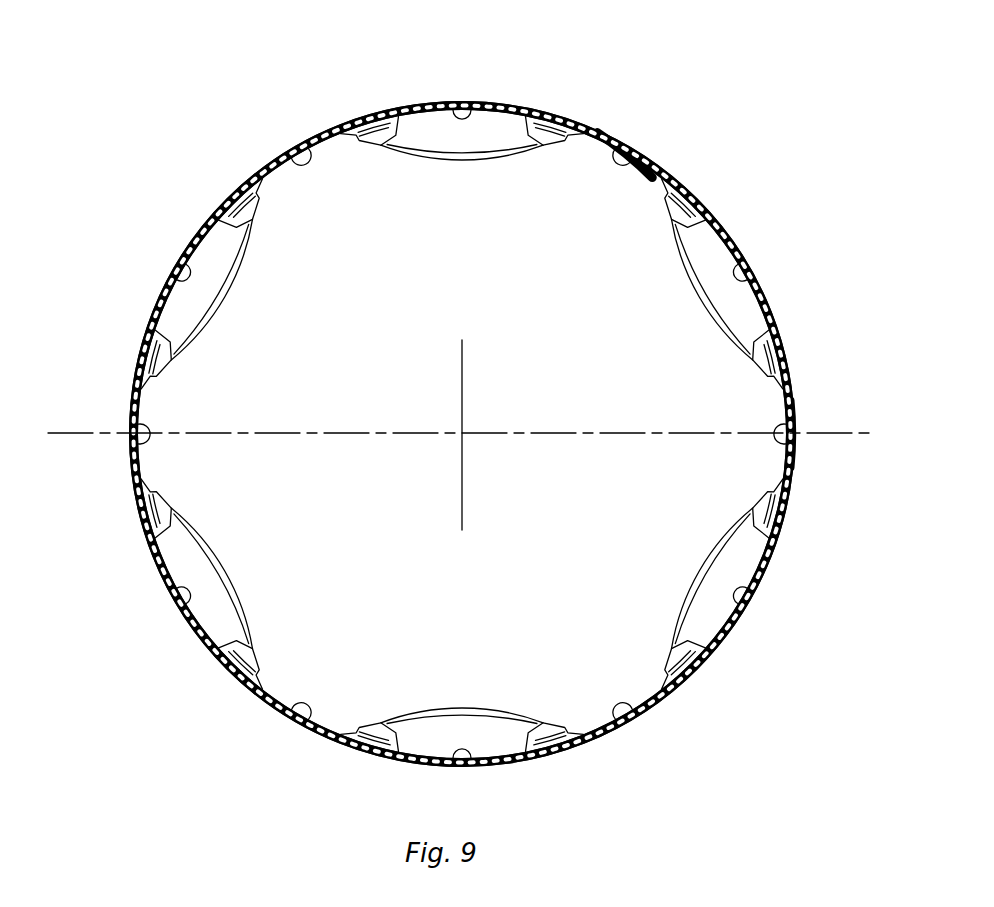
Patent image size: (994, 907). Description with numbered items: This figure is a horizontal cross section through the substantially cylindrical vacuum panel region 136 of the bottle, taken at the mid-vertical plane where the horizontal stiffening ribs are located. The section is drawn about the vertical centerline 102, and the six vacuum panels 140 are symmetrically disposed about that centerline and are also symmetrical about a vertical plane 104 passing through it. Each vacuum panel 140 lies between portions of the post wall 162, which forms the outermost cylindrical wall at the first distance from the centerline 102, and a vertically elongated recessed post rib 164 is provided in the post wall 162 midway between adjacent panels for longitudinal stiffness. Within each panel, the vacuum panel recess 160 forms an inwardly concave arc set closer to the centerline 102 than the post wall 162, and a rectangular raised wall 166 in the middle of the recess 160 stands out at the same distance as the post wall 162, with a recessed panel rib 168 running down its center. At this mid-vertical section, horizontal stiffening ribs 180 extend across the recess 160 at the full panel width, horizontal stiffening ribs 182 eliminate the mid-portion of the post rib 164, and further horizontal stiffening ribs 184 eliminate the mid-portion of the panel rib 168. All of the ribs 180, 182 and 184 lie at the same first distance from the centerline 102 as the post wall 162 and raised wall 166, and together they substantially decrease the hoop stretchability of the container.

The vertical centerline 102 is at (461, 430).
The vertical plane 104 is at (829, 431).
The vacuum panel region 136 is at (326, 133).
The vacuum panel 140 is at (513, 397).
The vacuum panel recess 160 is at (693, 277).
The post wall 162 is at (597, 131).
The post rib 164 is at (624, 177).
The raised wall 166 is at (732, 240).
The panel rib 168 is at (725, 297).
The horizontal stiffening rib 180 is at (689, 197).
The horizontal stiffening rib 182 is at (627, 143).
The horizontal stiffening rib 184 is at (749, 265).